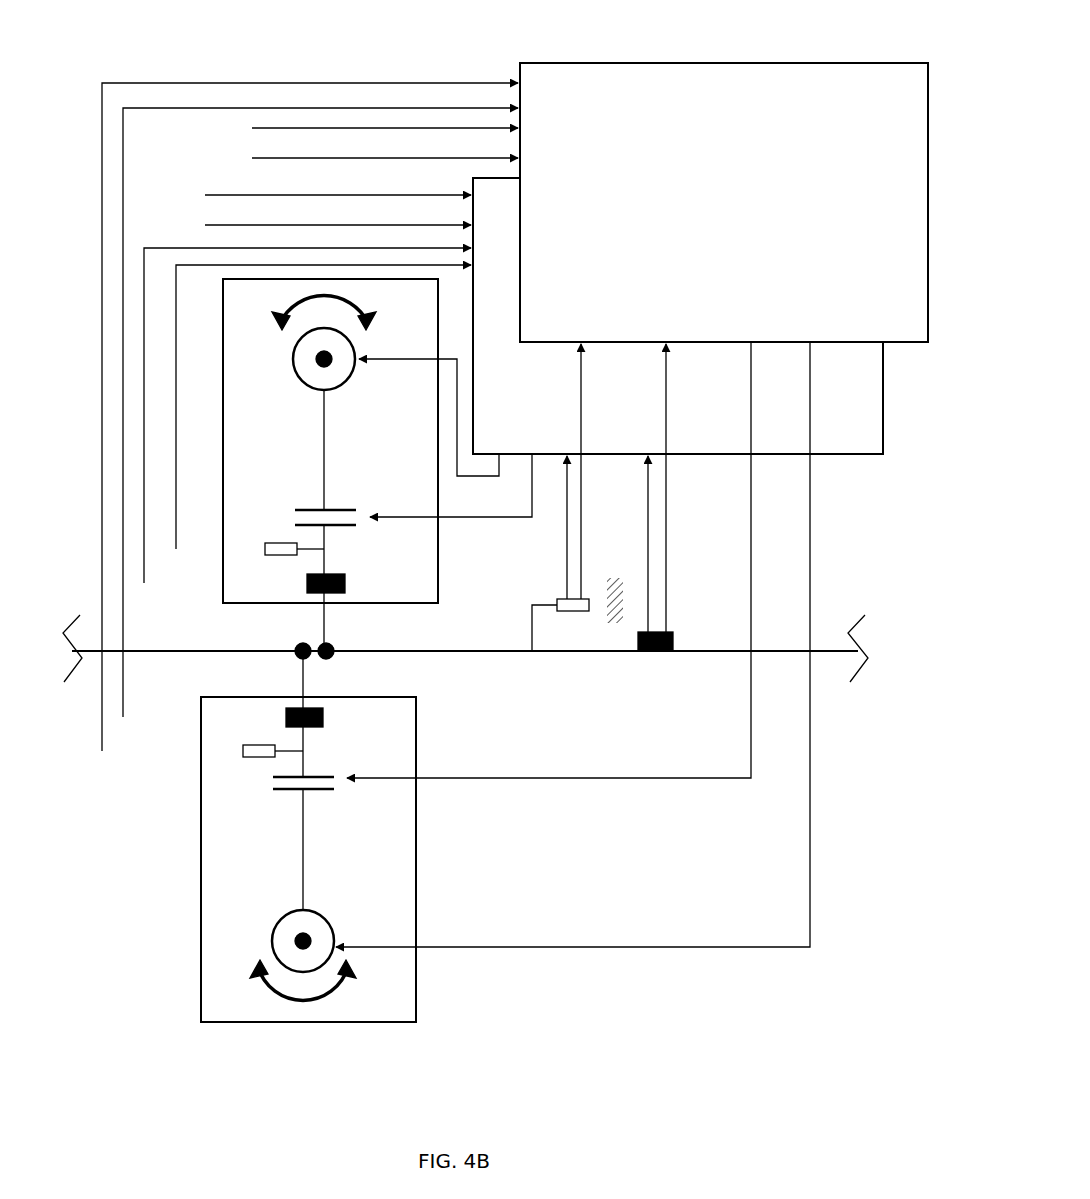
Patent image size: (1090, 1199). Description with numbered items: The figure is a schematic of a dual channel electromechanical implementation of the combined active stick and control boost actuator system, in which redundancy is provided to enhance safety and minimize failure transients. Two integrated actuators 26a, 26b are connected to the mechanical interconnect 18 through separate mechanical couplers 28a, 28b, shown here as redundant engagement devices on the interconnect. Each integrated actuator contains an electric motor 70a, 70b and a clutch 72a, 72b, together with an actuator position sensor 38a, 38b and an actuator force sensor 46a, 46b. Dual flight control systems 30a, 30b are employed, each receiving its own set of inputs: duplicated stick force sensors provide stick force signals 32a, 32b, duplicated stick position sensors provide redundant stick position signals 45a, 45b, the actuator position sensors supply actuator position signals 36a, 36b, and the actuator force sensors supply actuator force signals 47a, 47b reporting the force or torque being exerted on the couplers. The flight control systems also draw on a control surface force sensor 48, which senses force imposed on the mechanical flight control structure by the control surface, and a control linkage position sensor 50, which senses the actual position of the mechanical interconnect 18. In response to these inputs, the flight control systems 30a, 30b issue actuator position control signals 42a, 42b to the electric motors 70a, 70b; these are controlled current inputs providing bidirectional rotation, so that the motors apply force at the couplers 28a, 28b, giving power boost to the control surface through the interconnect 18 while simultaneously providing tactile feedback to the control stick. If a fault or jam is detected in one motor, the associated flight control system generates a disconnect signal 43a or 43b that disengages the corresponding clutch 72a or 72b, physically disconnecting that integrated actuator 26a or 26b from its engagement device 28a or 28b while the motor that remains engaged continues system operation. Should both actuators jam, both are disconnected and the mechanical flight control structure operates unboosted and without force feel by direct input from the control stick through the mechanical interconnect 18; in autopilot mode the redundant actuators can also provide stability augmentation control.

The mechanical interconnect 18 is at (430, 655).
The integrated actuator 26a is at (201, 858).
The integrated actuator 26b is at (440, 566).
The mechanical coupler 28a is at (300, 643).
The mechanical coupler 28b is at (330, 643).
The flight control system 30a is at (684, 63).
The flight control system 30b is at (826, 456).
The stick force signal 32a is at (414, 160).
The stick force signal 32b is at (396, 227).
The first resistor sense line 36a is at (102, 431).
The second resistor sense line 36b is at (176, 378).
The first resistor 38a is at (255, 758).
The second resistor 38b is at (288, 543).
The actuator position control signal 42a is at (600, 947).
The actuator position control signal 42b is at (402, 360).
The disconnect signal 43a is at (565, 778).
The disconnect signal 43b is at (478, 518).
The stick position signal 45a is at (382, 130).
The stick position signal 45b is at (355, 197).
The first switch 46a is at (339, 704).
The second switch 46b is at (337, 574).
The first switch control line 47a is at (123, 180).
The second switch control line 47b is at (144, 583).
The control surface force sensor 48 is at (670, 632).
The control linkage position sensor 50 is at (582, 598).
The electric motor 70a is at (328, 920).
The electric motor 70b is at (314, 385).
The clutch 72a is at (317, 790).
The clutch 72b is at (312, 508).